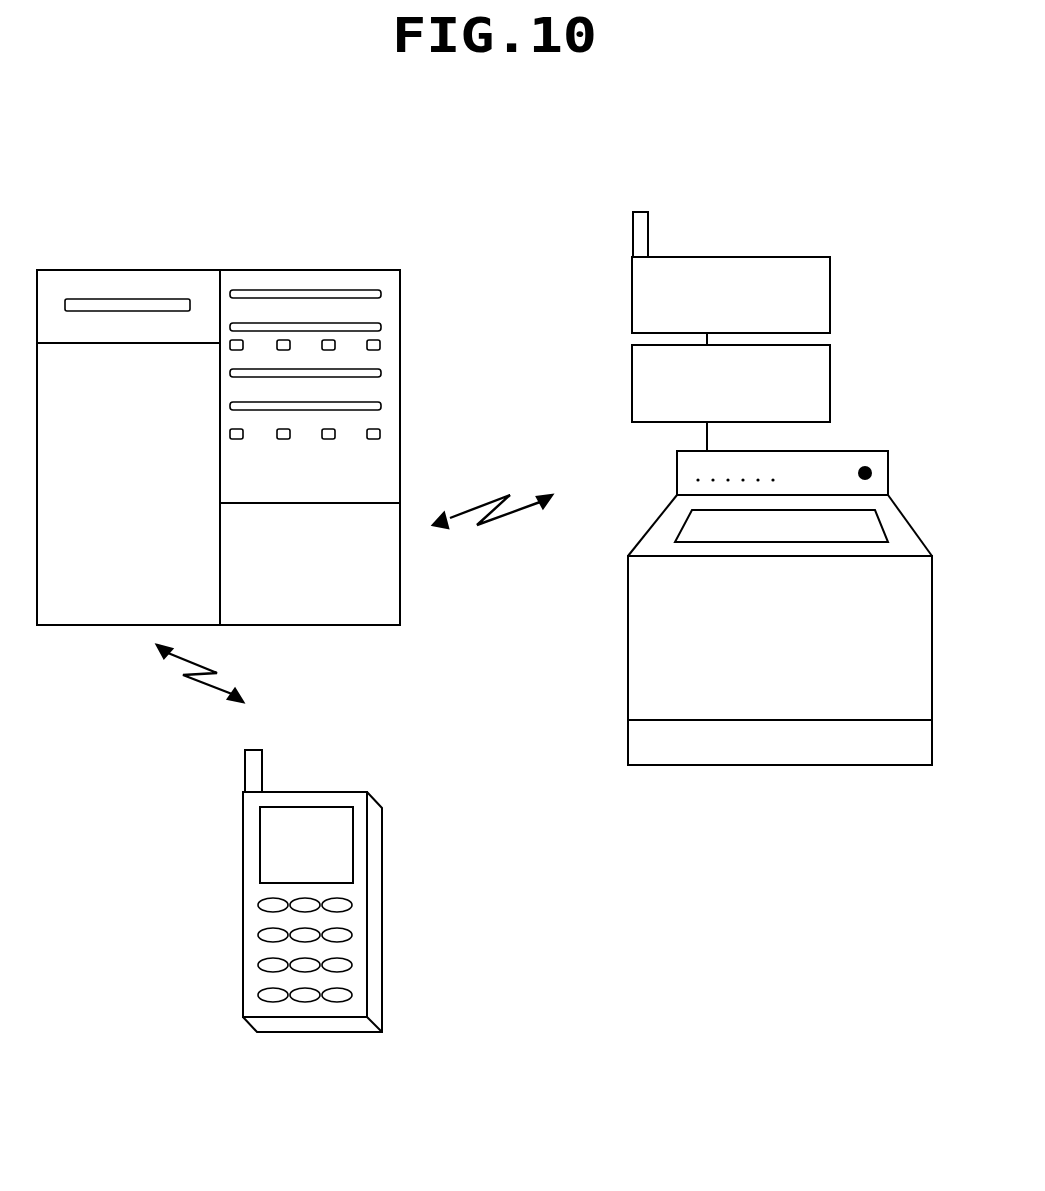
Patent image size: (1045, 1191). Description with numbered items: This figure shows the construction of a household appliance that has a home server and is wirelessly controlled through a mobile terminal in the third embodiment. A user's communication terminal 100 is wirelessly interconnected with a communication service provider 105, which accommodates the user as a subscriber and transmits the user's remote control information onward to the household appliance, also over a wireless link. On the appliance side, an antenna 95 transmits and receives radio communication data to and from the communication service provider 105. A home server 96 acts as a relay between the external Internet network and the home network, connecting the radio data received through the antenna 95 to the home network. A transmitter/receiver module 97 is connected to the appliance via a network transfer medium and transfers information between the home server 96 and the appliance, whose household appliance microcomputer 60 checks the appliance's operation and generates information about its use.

The communication service provider 105 is at (228, 266).
The communication terminal 100 is at (307, 786).
The antenna 95 is at (648, 233).
The home server 96 is at (830, 293).
The transmitter/receiver module 97 is at (830, 372).
The household appliance microcomputer 60 is at (838, 436).